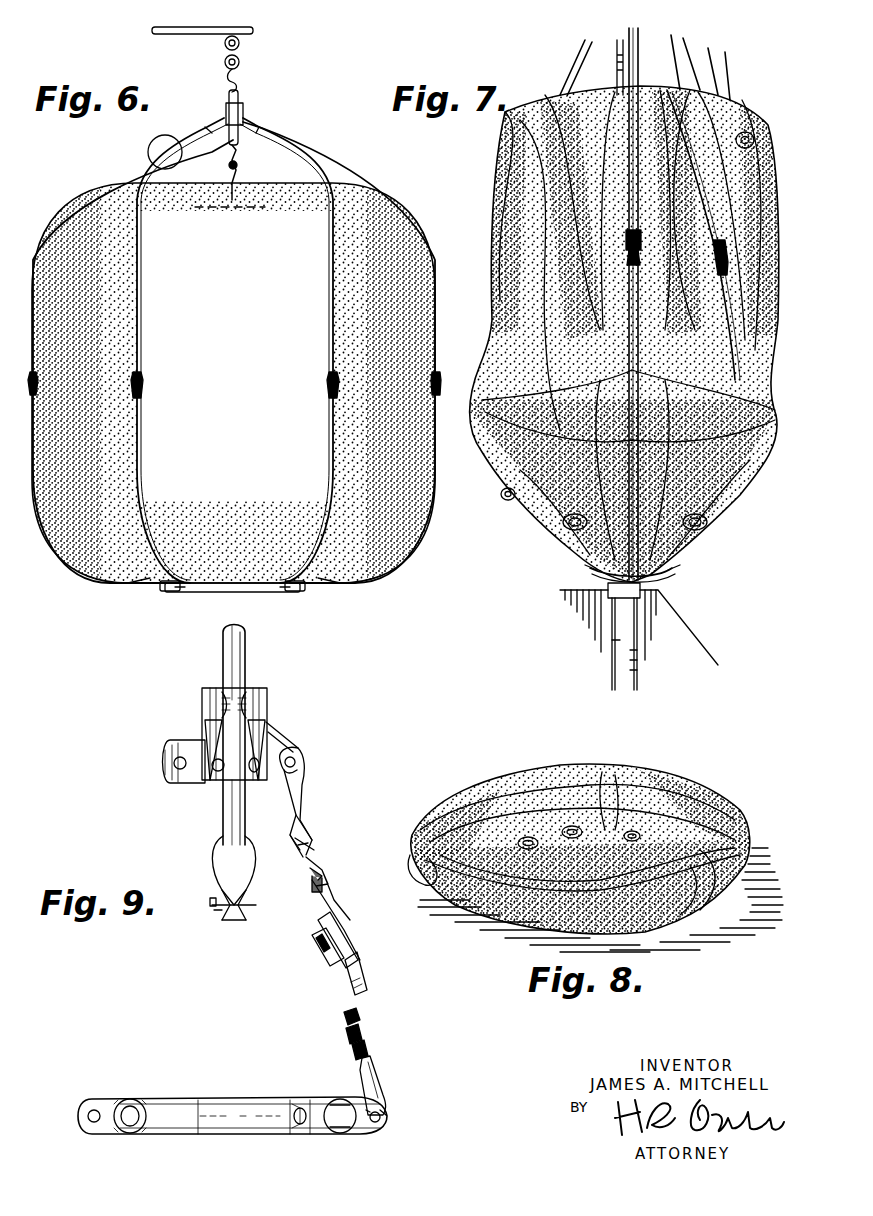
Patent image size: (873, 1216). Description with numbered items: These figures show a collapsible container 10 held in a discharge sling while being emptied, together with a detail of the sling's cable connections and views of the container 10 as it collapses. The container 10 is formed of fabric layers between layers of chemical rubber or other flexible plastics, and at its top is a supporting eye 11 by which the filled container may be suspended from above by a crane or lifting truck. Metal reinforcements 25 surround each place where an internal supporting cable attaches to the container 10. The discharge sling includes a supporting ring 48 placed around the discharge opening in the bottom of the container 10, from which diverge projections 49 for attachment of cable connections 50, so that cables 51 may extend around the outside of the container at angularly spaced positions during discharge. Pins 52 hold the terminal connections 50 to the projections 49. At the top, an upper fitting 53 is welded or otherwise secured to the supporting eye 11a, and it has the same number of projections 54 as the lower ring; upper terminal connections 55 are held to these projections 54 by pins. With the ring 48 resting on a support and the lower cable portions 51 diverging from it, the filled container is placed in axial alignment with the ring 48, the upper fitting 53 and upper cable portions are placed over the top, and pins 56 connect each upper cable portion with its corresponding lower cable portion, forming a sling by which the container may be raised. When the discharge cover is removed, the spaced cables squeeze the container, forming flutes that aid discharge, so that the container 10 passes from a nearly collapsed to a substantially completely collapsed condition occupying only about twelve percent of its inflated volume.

In FIG. 6, the collapsible container 10 is at (246, 396).
In FIG. 7, the collapsible container 10 is at (535, 228).
In FIG. 8, the collapsible container 10 is at (495, 806).
In FIG. 6, the supporting eye 11 is at (244, 188).
In FIG. 6, the supporting eye 11a is at (245, 112).
In FIG. 9, the supporting eye 11a is at (245, 660).
In FIG. 7, the metal reinforcement 25 is at (540, 530).
In FIG. 6, the supporting ring 48 is at (250, 592).
In FIG. 7, the supporting ring 48 is at (665, 584).
In FIG. 9, the supporting ring 48 is at (162, 1112).
In FIG. 9, the projections 49 is at (94, 1108).
In FIG. 6, the cable connection 50 is at (300, 588).
In FIG. 9, the cable connection 50 is at (380, 1072).
In FIG. 6, the cables 51 is at (92, 572).
In FIG. 7, the cables 51 is at (724, 316).
In FIG. 9, the cables 51 is at (366, 1046).
In FIG. 9, the pins 52 is at (378, 1124).
In FIG. 9, the upper fitting 53 is at (268, 706).
In FIG. 9, the projections 54 is at (195, 765).
In FIG. 6, the upper terminal connections 55 is at (262, 132).
In FIG. 9, the upper terminal connections 55 is at (310, 808).
In FIG. 6, the pins 56 is at (440, 382).
In FIG. 7, the pins 56 is at (488, 395).
In FIG. 9, the pins 56 is at (358, 942).